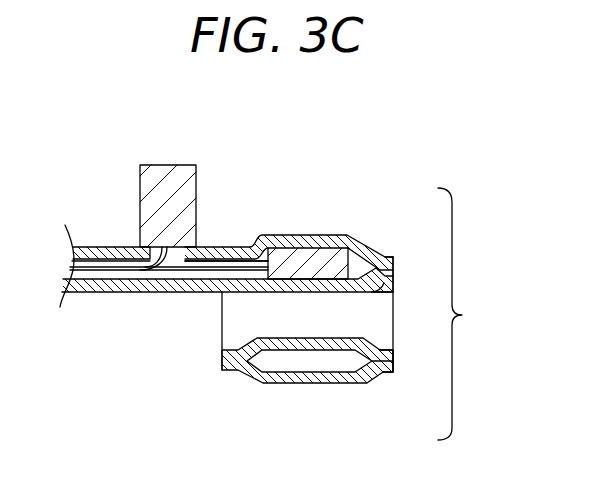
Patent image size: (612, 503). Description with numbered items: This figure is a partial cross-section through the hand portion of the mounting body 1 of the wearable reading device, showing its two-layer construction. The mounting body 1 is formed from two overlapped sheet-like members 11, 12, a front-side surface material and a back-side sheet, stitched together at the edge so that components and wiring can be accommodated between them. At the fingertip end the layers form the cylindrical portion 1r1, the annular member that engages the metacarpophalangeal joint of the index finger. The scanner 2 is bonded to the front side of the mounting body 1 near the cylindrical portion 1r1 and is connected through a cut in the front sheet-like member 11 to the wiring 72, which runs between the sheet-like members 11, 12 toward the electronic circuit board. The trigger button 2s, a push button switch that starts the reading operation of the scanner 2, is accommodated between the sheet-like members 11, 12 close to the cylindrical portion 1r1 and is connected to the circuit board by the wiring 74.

The mounting body 1 is at (459, 314).
The sheet-like member 11 is at (386, 258).
The sheet-like member 12 is at (394, 291).
The cylindrical portion 1r1 is at (315, 383).
The scanner 2 is at (182, 165).
The trigger button 2s is at (313, 262).
The wiring 72 is at (98, 270).
The wiring 74 is at (218, 270).